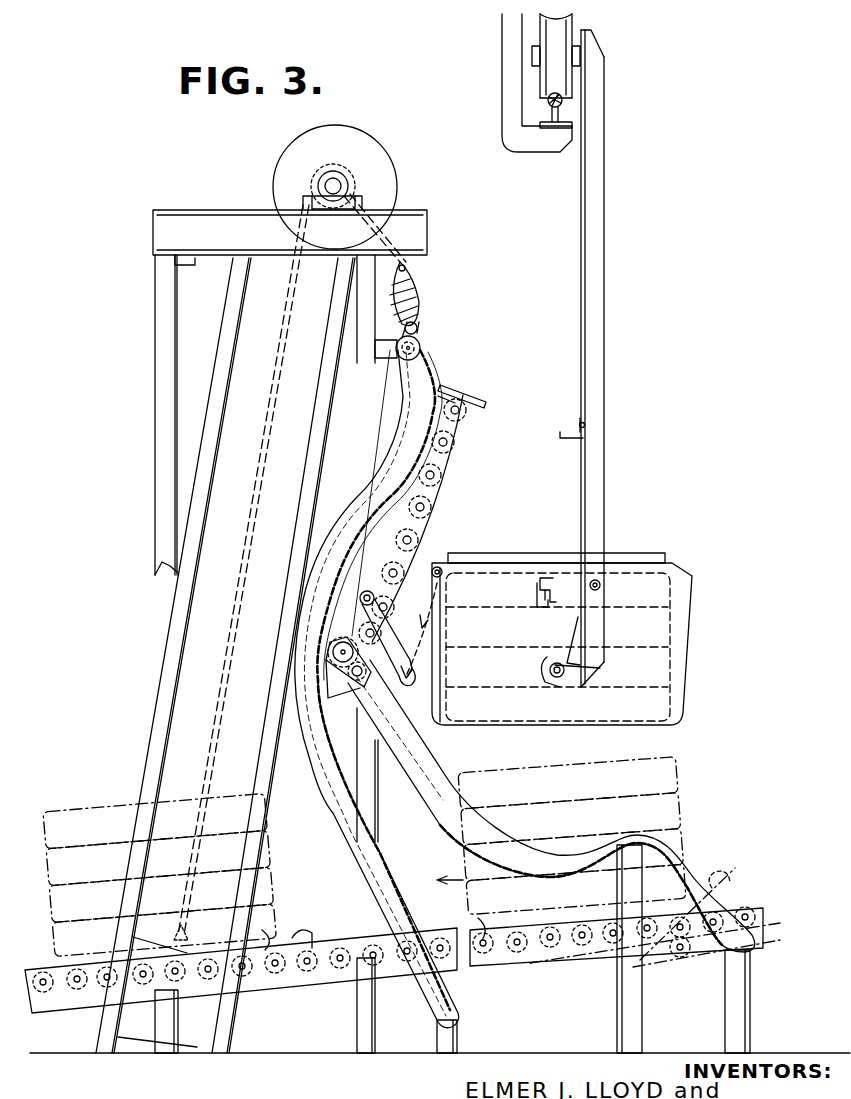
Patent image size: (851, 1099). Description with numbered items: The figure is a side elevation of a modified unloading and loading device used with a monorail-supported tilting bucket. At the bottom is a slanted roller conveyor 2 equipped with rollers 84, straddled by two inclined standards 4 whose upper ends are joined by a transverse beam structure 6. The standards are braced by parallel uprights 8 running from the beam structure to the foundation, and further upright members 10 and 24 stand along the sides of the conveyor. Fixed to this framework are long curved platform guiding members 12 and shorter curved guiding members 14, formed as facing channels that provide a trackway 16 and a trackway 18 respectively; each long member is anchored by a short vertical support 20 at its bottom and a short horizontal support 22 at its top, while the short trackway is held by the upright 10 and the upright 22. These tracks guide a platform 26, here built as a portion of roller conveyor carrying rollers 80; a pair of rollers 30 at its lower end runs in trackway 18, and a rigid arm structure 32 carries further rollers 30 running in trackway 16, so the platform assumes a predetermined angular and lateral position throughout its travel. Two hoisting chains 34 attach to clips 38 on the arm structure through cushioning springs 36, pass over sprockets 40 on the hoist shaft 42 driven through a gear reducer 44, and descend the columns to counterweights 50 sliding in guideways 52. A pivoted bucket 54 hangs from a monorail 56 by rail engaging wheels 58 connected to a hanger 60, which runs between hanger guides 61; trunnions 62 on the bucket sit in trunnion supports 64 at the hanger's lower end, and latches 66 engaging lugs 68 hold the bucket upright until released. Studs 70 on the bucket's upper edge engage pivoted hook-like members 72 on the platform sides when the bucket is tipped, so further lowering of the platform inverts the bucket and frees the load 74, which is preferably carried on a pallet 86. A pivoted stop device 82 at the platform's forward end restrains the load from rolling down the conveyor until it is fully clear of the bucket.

The conveyor 2 is at (262, 990).
The standards 4 is at (162, 735).
The transverse beam structure or platform 6 is at (200, 232).
The parallel uprights 8 is at (357, 1034).
The upright member 10 is at (642, 1036).
The curved platform guiding members 12 is at (392, 478).
The shorter curved platform guiding members 14 is at (412, 768).
The trackway 16 is at (372, 505).
The trackway 18 is at (452, 812).
The short vertical support 20 is at (457, 1036).
The short horizontal support 22 is at (386, 394).
The upright member 24 is at (745, 1036).
The platform 26 is at (448, 468).
The rollers 30 is at (420, 348).
The arm structure 32 is at (388, 428).
The hoisting chains 34 is at (250, 580).
The springs 36 is at (420, 285).
The clips 38 is at (420, 316).
The sprockets 40 is at (320, 175).
The hoist shaft 42 is at (340, 186).
The gear reducer 44 is at (362, 143).
The counterweights 50 is at (138, 1040).
The guideways 52 is at (198, 712).
The bucket 54 is at (690, 590).
The monorail 56 is at (548, 104).
The rail engaging wheels 58 is at (550, 40).
The bucket support or hanger 60 is at (602, 322).
The hanger guides 61 is at (606, 428).
The trunnions 62 is at (560, 680).
The trunnion supports 64 is at (585, 665).
The latches 66 is at (560, 580).
The lugs 68 is at (547, 612).
The studs 70 is at (443, 575).
The hook-like member 72 is at (408, 668).
The load 74 is at (686, 618).
The rollers 80 is at (437, 478).
The stop device 82 is at (460, 400).
The rollers 84 is at (280, 950).
The pallet 86 is at (625, 553).